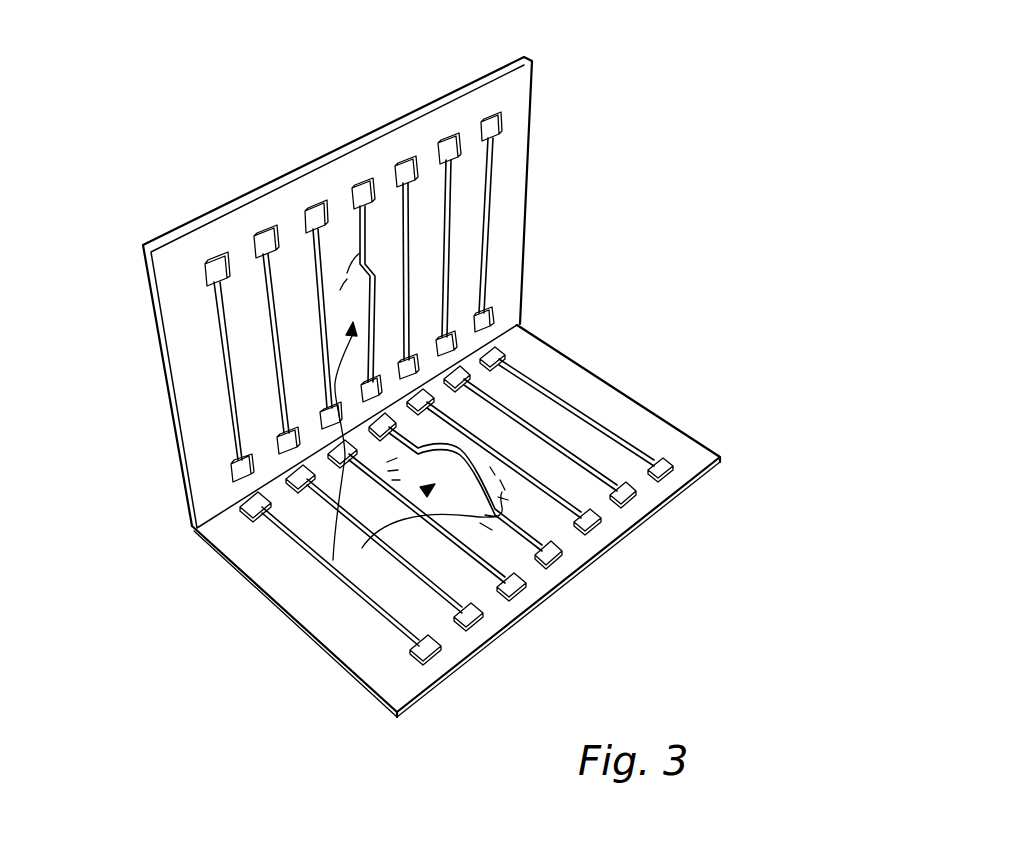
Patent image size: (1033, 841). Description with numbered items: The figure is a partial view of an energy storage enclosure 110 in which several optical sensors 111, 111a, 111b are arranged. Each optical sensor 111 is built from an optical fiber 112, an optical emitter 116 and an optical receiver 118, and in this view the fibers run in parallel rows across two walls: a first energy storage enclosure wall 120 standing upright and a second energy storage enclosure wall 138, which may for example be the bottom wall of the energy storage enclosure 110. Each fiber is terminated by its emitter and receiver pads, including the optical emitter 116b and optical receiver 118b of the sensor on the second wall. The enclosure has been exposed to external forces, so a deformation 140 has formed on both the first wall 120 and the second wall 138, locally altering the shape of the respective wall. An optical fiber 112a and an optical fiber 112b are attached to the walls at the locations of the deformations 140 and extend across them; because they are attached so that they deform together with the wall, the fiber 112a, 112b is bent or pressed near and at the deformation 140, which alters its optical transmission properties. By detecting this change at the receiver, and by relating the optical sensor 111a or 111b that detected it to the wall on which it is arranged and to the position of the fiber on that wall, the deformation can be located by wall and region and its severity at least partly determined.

The energy storage enclosure 110 is at (700, 64).
The optical sensor 111 is at (250, 282).
The optical sensor 111a is at (340, 208).
The optical sensor 111b is at (502, 547).
The optical fiber 112 is at (488, 151).
The optical fiber 112a is at (366, 300).
The optical fiber 112b is at (660, 437).
The optical emitter 116 is at (218, 257).
The optical emitter 116b is at (565, 555).
The optical receiver 118 is at (236, 477).
The optical receiver 118b is at (392, 421).
The first energy storage enclosure wall 120 is at (146, 299).
The second energy storage enclosure wall 138 is at (293, 625).
The deformation 140 is at (225, 523).